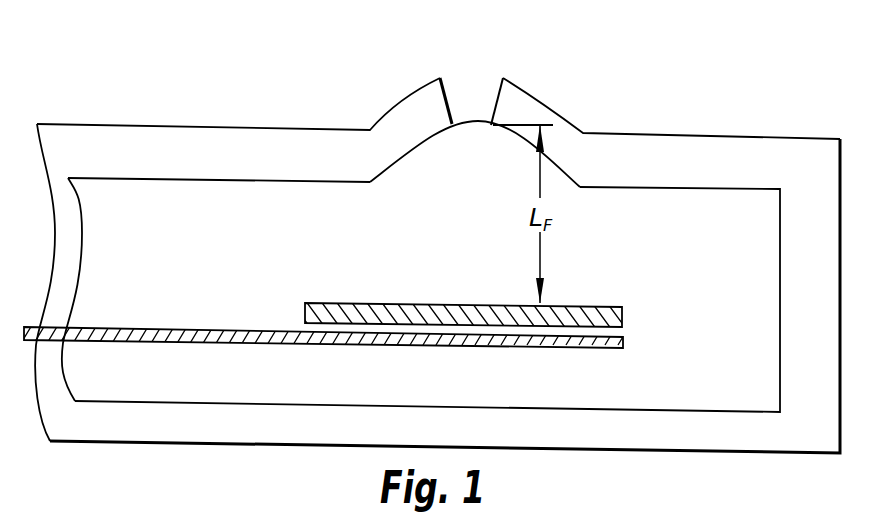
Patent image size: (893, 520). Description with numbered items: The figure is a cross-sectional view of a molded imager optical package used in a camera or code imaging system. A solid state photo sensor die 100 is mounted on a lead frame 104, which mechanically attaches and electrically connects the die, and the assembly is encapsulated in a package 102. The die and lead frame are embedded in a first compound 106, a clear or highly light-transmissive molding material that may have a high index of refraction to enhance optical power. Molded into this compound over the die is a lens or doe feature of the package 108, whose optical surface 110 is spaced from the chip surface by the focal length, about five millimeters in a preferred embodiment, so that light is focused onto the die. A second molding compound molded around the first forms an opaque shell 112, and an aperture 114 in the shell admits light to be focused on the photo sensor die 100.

The photo sensor die 100 is at (625, 315).
The package 102 is at (292, 116).
The lead frame 104 is at (220, 330).
The first compound 106 is at (475, 245).
The lens or doe feature of the package 108 is at (483, 177).
The optical surface 110 is at (469, 120).
The opaque shell 112 is at (735, 173).
The aperture 114 is at (497, 105).